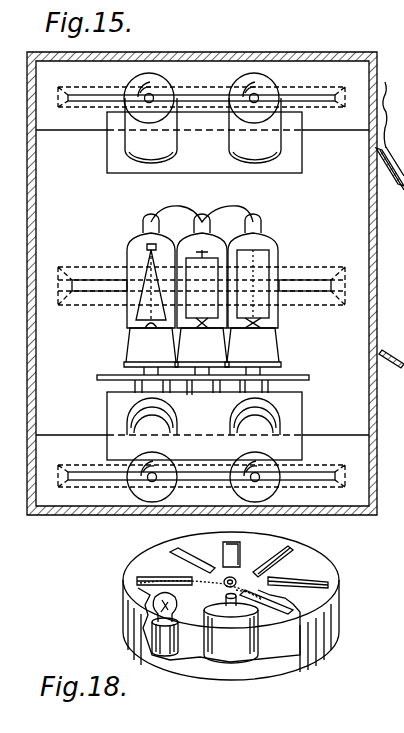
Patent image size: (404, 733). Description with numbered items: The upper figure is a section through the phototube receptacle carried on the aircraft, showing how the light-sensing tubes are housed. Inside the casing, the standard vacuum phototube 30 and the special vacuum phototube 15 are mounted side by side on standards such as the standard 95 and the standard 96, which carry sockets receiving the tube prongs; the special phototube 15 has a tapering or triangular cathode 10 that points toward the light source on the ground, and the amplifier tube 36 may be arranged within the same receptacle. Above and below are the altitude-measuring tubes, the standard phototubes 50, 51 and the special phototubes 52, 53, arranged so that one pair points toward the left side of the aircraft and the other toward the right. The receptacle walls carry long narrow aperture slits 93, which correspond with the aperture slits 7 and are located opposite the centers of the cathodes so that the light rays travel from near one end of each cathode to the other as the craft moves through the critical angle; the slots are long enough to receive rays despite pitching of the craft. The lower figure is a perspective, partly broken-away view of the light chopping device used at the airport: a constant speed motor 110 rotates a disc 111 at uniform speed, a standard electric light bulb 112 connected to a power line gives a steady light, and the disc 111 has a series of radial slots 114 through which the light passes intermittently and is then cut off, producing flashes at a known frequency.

In FIG. 15, the aperture slits 7 is at (377, 420).
In FIG. 15, the tapering cathode 10 is at (146, 257).
In FIG. 15, the special vacuum phototube 15 is at (138, 240).
In FIG. 15, the standard vacuum phototube 30 is at (264, 242).
In FIG. 15, the amplifier tube 36 is at (208, 242).
In FIG. 15, the standard phototube 50 is at (125, 123).
In FIG. 15, the standard phototube 51 is at (275, 126).
In FIG. 15, the special phototube 52 is at (135, 444).
In FIG. 15, the special phototube 53 is at (236, 447).
In FIG. 15, the aperture slits 93 is at (322, 96).
In FIG. 15, the standard 95 is at (297, 376).
In FIG. 15, the standard 96 is at (302, 410).
In FIG. 18, the constant speed motor 110 is at (201, 622).
In FIG. 18, the disc 111 is at (339, 572).
In FIG. 18, the electric light bulb 112 is at (185, 598).
In FIG. 18, the radial slots 114 is at (290, 556).